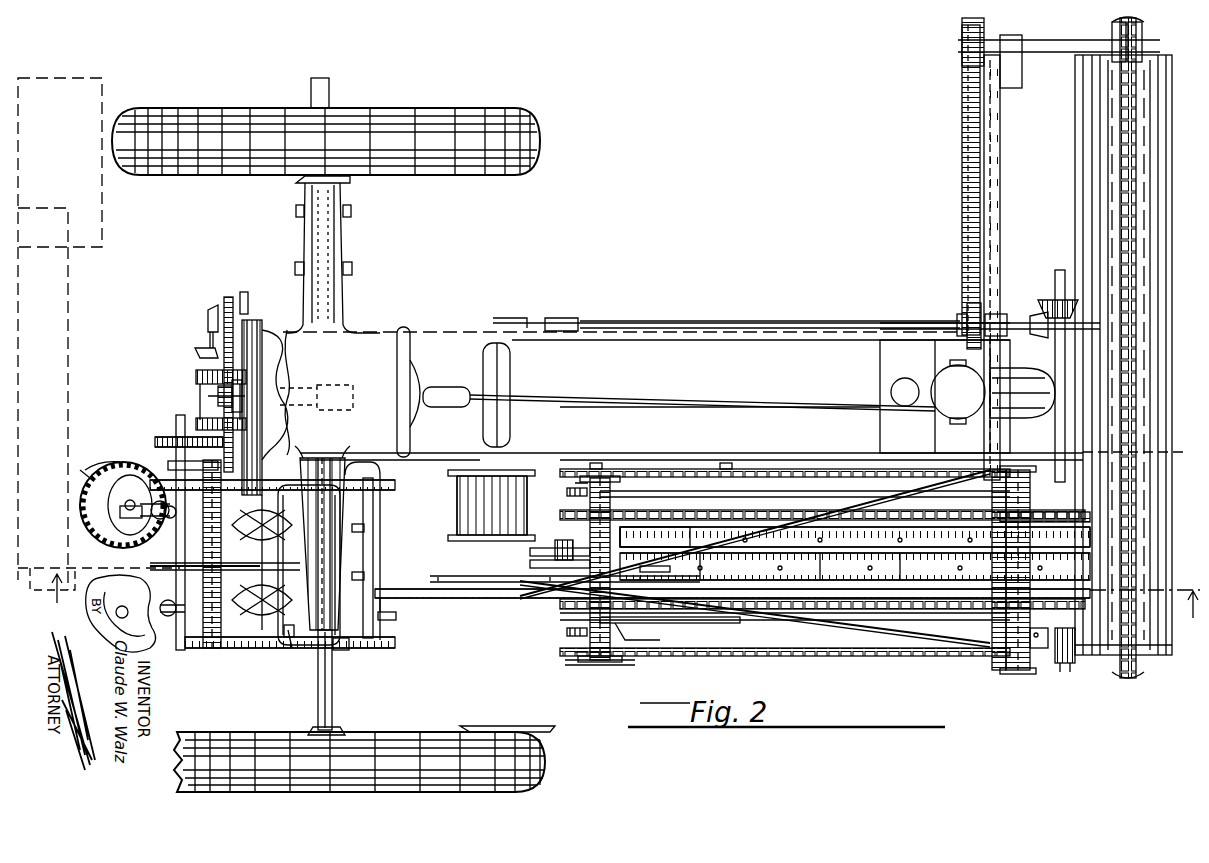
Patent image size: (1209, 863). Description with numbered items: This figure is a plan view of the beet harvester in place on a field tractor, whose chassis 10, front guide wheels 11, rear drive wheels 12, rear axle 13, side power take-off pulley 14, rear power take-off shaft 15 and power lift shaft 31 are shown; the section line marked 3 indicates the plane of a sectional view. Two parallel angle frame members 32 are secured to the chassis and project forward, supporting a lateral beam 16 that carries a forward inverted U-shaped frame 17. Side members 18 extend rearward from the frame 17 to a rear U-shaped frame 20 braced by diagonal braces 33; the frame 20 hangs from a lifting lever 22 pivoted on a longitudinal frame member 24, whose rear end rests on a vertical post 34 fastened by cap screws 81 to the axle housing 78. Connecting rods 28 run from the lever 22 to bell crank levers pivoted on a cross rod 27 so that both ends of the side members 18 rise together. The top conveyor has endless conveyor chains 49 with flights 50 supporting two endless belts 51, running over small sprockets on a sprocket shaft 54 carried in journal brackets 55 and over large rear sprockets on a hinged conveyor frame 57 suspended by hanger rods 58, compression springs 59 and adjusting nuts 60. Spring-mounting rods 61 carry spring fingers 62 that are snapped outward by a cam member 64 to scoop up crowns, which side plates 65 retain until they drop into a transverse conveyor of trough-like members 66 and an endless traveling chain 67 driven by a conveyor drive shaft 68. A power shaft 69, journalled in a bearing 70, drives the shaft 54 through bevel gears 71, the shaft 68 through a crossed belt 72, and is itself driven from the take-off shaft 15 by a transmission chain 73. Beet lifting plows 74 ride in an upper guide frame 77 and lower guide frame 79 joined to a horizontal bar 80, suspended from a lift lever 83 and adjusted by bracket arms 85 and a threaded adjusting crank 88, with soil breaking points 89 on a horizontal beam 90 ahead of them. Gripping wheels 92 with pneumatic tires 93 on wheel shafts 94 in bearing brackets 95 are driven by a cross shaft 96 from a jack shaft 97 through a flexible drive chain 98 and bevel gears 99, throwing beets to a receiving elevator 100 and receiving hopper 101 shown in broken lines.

The section line 3- 3 is at (609, 602).
The chassis 10 is at (458, 333).
The front guide wheels 11 is at (1010, 372).
The rear drive wheels 12 is at (468, 175).
The rear axle 13 is at (332, 675).
The side power take-off pulley 14 is at (485, 500).
The rear power take-off shaft 15 is at (210, 397).
The lateral beam 16 is at (1003, 268).
The forward inverted U-shaped frame 17 is at (1012, 655).
The side members 18 is at (790, 508).
The rear U-shaped frame 20 is at (592, 652).
The lifting lever 22 is at (450, 568).
The longitudinal frame member 24 is at (420, 600).
The cross rod 27 is at (1022, 660).
The connecting rods 28 is at (895, 630).
The power lift shaft 31 is at (229, 573).
The angle frame members 32 is at (922, 327).
The diagonal braces 33 is at (665, 470).
The vertical post 34 is at (392, 615).
The endless conveyor chains 49 is at (795, 618).
The flights 50 is at (962, 552).
The endless belts 51 is at (880, 572).
The sprocket shaft 54 is at (1062, 668).
The journal brackets 55 is at (1042, 648).
The conveyor frame 57 is at (728, 492).
The hanger rods 58 is at (603, 478).
The compression springs 59 is at (578, 484).
The adjusting nuts 60 is at (567, 492).
The spring-mounting rods 61 is at (562, 542).
The spring fingers 62 is at (535, 565).
The cam member 64 is at (655, 620).
The side plates 65 is at (740, 512).
The trough-like members 66 is at (1112, 642).
The endless traveling chain 67 is at (1130, 588).
The conveyor drive shaft 68 is at (1032, 52).
The power shaft 69 is at (730, 325).
The bearing 70 is at (975, 322).
The bevel gears 71 is at (1042, 303).
The crossed belt 72 is at (970, 165).
The transmission chain 73 is at (232, 298).
The beet lifting plows 74 is at (232, 548).
The upper guide frame 77 is at (290, 648).
The axle housing 78 is at (330, 562).
The lower guide frame 79 is at (372, 486).
The horizontal bar 80 is at (378, 507).
The cap screws 81 is at (366, 530).
The lift lever 83 is at (150, 566).
The adjusting bracket arms 85 is at (200, 661).
The threaded adjusting crank 88 is at (230, 465).
The soil breaking points 89 is at (318, 478).
The horizontal beam 90 is at (345, 640).
The gripping wheels 92 is at (122, 462).
The pneumatic tires 93 is at (95, 482).
The wheel shafts 94 is at (140, 506).
The bearing brackets 95 is at (135, 515).
The cross shaft 96 is at (192, 435).
The jack shaft 97 is at (198, 385).
The flexible drive chain 98 is at (175, 447).
The bevel gears 99 is at (208, 350).
The receiving elevator 100 is at (68, 336).
The receiving hopper 101 is at (97, 200).